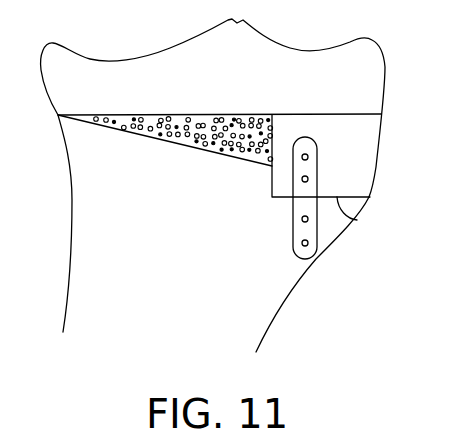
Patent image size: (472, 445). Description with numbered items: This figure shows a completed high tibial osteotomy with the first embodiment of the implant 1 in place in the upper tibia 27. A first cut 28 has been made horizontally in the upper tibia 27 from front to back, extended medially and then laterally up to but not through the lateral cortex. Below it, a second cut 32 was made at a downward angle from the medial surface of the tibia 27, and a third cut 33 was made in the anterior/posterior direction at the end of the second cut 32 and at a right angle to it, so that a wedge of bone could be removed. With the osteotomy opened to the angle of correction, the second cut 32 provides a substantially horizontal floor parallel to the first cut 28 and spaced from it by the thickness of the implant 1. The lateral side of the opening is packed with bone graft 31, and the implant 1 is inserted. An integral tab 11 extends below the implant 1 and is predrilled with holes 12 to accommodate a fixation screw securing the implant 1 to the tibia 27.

The implant 1 is at (390, 158).
The tab 11 is at (317, 236).
The hole 12 is at (301, 220).
The tibia 27 is at (245, 303).
The cut 28 is at (215, 112).
The bone graft 31 is at (217, 147).
The second cut 32 is at (357, 220).
The third cut 33 is at (272, 178).